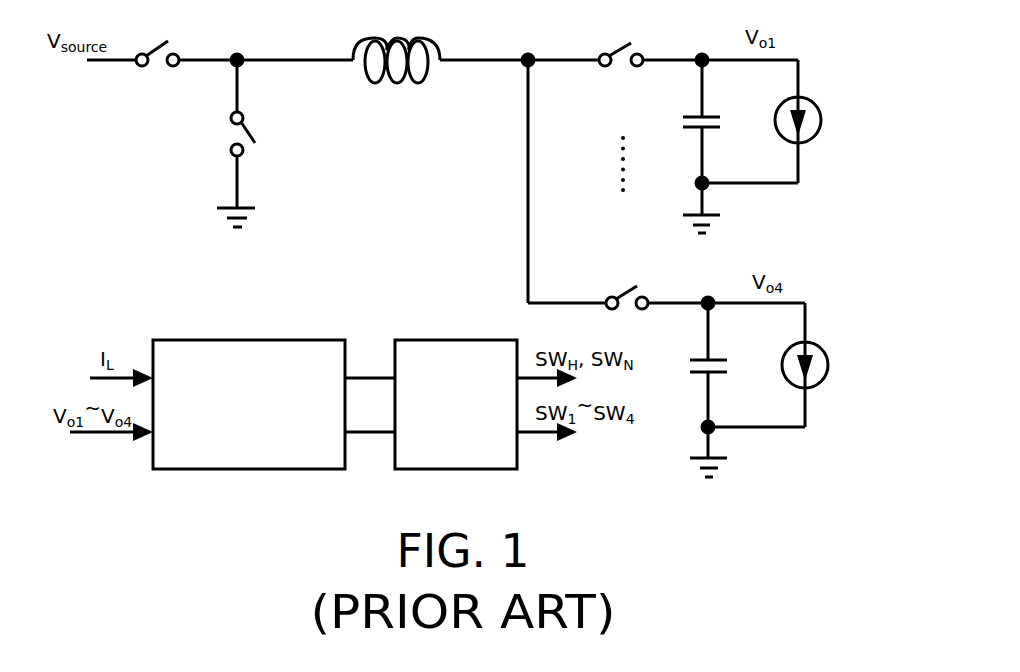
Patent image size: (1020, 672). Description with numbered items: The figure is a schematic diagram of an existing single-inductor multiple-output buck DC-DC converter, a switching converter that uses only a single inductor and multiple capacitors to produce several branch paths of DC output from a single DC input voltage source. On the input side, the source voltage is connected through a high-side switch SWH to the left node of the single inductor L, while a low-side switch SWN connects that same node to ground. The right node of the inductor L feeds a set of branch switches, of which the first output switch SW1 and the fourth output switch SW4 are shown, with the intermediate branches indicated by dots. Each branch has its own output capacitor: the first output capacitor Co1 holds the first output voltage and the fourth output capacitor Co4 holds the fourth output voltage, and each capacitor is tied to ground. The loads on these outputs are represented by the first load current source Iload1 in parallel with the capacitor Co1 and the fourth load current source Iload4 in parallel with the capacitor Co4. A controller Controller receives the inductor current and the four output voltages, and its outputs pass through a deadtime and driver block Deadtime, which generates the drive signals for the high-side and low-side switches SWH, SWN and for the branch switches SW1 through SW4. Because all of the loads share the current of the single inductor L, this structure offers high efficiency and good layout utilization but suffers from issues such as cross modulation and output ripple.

The high-side switch SWH is at (164, 37).
The low-side switch SWN is at (262, 143).
The inductor L is at (396, 48).
The first output switch SW1 is at (622, 41).
The fourth output switch SW4 is at (625, 283).
The first output capacitor Co1 is at (717, 137).
The fourth output capacitor Co4 is at (724, 380).
The first load current source Iload1 is at (819, 121).
The fourth load current source Iload4 is at (826, 365).
The controller Controller is at (249, 404).
The deadtime and driver block Deadtime is at (456, 404).